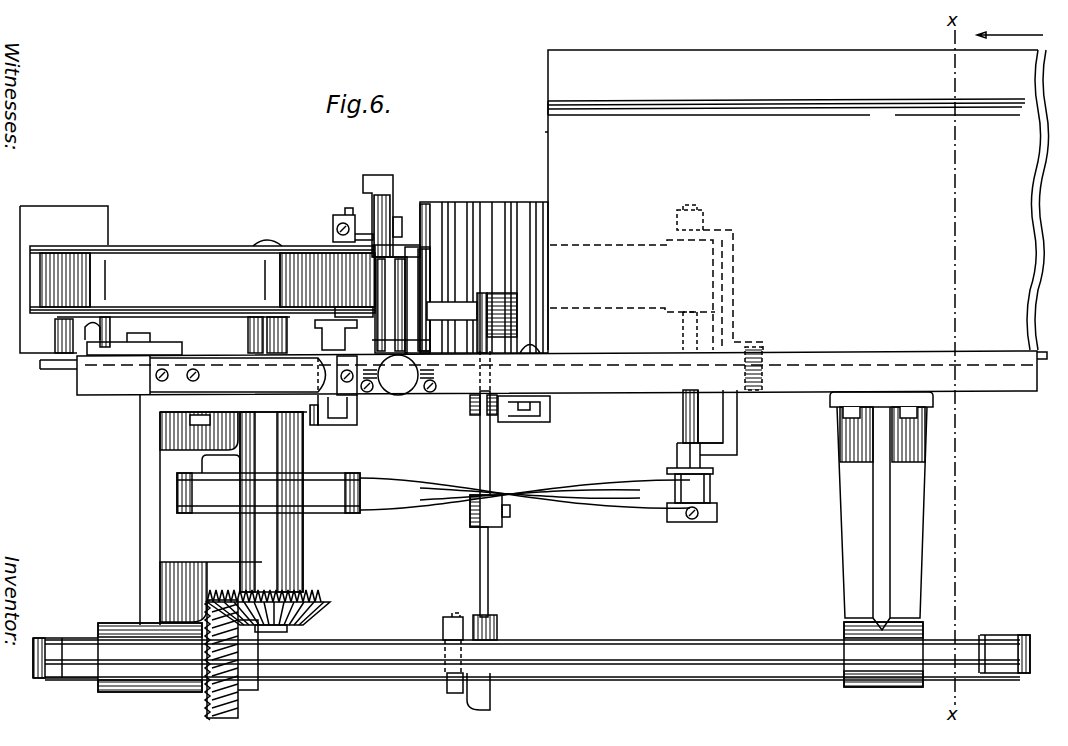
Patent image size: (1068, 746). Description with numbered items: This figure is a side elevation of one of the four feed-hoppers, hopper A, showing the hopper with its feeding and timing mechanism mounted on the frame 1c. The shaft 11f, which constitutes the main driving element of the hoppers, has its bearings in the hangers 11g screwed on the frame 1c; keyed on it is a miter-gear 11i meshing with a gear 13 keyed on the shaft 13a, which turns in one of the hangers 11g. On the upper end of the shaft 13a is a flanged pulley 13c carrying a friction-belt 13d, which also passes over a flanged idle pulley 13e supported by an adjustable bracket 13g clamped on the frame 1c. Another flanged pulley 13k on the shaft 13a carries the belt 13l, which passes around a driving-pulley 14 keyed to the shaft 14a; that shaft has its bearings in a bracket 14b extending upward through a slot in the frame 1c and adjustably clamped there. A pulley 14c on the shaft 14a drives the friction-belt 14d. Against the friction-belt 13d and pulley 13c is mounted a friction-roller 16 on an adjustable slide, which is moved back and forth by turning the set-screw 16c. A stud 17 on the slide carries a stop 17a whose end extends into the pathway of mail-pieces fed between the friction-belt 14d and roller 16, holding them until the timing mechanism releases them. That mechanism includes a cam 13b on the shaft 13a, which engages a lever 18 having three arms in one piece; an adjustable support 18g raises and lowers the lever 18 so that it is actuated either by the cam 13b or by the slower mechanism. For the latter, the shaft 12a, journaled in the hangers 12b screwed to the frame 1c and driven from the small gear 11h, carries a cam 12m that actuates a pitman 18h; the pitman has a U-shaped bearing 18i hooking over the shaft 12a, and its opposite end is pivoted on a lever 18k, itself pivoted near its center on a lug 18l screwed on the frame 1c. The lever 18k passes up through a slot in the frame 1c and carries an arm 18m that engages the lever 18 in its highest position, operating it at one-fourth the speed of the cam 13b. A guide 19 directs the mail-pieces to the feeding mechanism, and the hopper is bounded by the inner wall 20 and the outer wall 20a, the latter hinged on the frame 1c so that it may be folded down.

The frame 1c is at (108, 385).
The shaft 11f is at (780, 660).
The hangers 11g is at (150, 543).
The small gear 11h is at (973, 663).
The miter-gear 11i is at (217, 710).
The shaft 12a is at (37, 677).
The hangers 12b is at (910, 520).
The cam 12m is at (450, 682).
The gear 13 is at (330, 597).
The shaft 13a is at (267, 244).
The cam 13b is at (110, 245).
The flanged pulley 13c is at (187, 248).
The friction-belt 13d is at (160, 266).
The flanged idle pulley 13e is at (128, 247).
The adjustable bracket 13g is at (157, 348).
The flanged pulley 13k is at (348, 472).
The belt 13l is at (408, 490).
The driving-pulley 14 is at (715, 513).
The shaft 14a is at (685, 423).
The bracket 14b is at (725, 432).
The pulley 14c is at (675, 243).
The friction-belt 14d is at (582, 257).
The friction-roller 16 is at (413, 260).
The set-screw 16c is at (402, 385).
The stud 17 is at (398, 317).
The stop 17a is at (380, 218).
The lever 18 is at (320, 342).
The adjustable support 18g is at (332, 229).
The pitman 18h is at (380, 180).
The U-shaped bearing 18i is at (497, 693).
The lever 18k is at (490, 457).
The lug 18l is at (550, 410).
The arm 18m is at (447, 308).
The guide 19 is at (453, 210).
The inner wall of the hopper 20 is at (798, 200).
The outer wall of the hopper 20a is at (786, 124).
The feed-hopper A is at (565, 138).